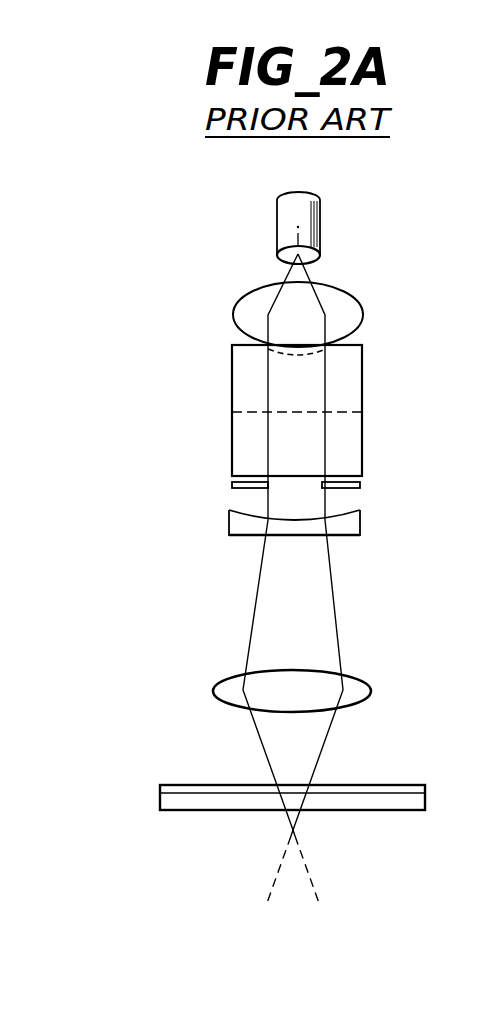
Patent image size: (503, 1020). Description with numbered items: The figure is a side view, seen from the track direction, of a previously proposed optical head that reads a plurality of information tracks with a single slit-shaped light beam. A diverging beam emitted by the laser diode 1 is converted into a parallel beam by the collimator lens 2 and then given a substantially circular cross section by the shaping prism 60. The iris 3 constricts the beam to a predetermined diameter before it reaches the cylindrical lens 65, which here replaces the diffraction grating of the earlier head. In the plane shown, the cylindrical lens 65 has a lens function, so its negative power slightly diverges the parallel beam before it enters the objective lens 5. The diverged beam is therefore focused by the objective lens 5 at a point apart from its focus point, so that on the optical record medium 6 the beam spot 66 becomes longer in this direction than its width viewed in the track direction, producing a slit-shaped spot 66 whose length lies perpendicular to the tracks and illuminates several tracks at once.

The laser diode 1 is at (320, 218).
The collimator lens 2 is at (357, 300).
The shaping prism 60 is at (362, 392).
The iris 3 is at (360, 486).
The cylindrical lens 65 is at (360, 525).
The objective lens 5 is at (370, 686).
The light spot 66 is at (292, 785).
The optical record medium 6 is at (425, 793).